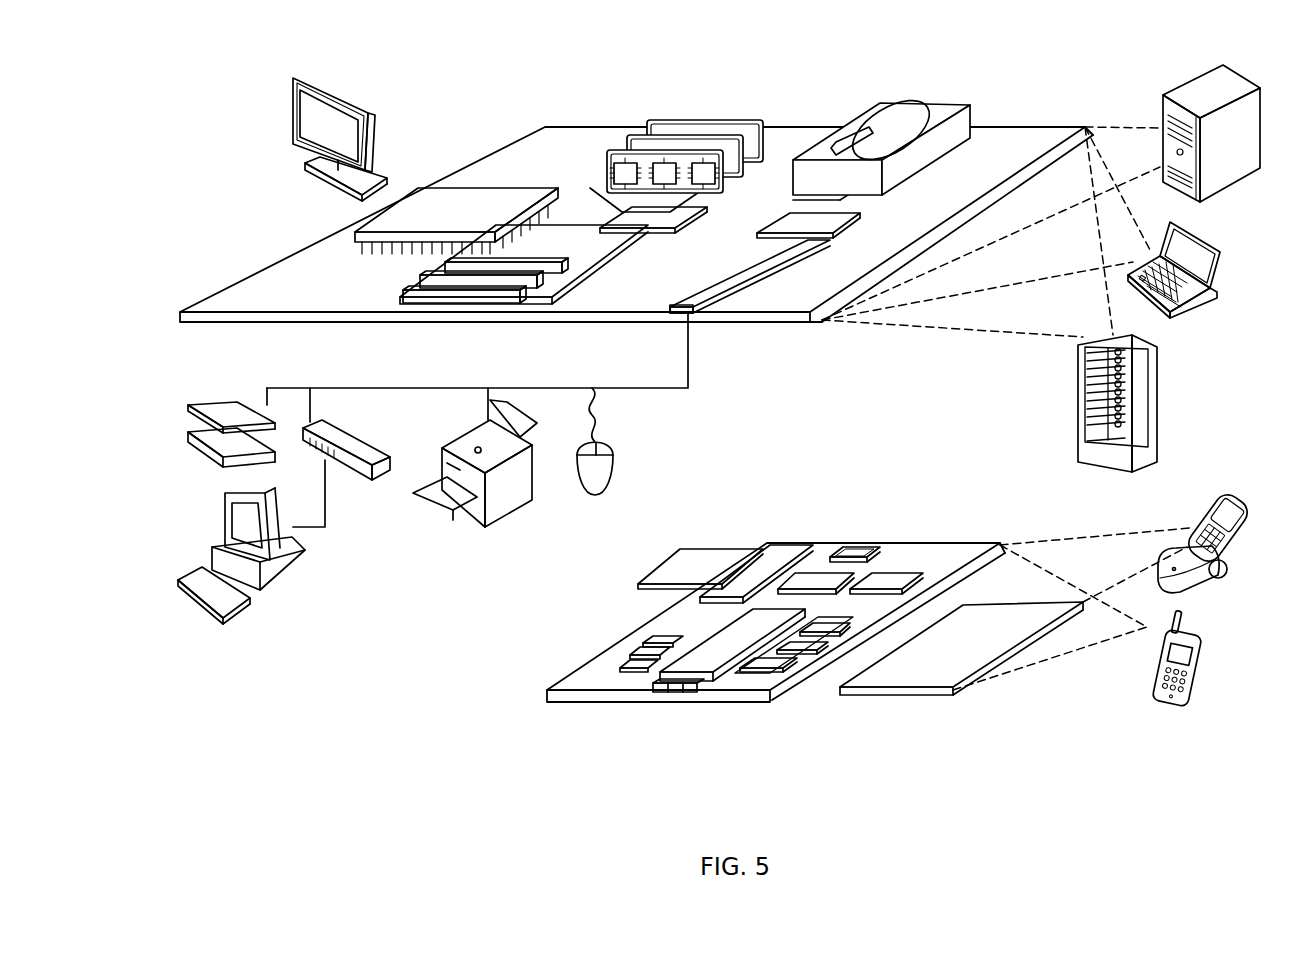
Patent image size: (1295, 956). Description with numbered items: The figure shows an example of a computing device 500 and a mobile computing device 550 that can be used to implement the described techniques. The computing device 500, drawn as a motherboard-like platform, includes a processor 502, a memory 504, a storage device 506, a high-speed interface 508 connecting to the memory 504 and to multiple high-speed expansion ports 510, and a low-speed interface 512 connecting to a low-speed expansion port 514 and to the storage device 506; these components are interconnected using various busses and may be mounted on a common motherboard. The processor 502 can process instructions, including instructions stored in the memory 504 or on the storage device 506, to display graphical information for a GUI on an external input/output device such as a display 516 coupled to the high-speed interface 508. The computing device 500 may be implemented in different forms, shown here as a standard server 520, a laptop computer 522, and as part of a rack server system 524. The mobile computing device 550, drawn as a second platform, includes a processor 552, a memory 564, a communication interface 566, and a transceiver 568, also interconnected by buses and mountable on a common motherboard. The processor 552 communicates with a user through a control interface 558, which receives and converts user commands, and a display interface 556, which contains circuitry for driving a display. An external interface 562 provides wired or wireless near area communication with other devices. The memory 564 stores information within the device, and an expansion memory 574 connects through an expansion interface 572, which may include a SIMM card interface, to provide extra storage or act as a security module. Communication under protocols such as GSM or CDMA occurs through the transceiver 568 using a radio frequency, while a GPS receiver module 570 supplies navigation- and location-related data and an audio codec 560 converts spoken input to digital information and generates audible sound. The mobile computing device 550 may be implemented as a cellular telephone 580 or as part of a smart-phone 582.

The computing device 500 is at (476, 100).
The processor 502 is at (355, 232).
The memory 504 is at (663, 121).
The storage device 506 is at (878, 118).
The high-speed interface 508 is at (605, 222).
The high-speed expansion ports 510 is at (403, 292).
The low-speed interface 512 is at (790, 222).
The low-speed expansion port 514 is at (693, 313).
The display 516 is at (300, 80).
The standard server 520 is at (1163, 118).
The laptop computer 522 is at (1220, 252).
The rack server system 524 is at (1078, 430).
The mobile computing device 550 is at (522, 702).
The processor 552 is at (714, 670).
The display interface 556 is at (778, 673).
The control interface 558 is at (803, 654).
The audio codec 560 is at (830, 636).
The external interface 562 is at (676, 692).
The memory 564 is at (635, 662).
The communication interface 566 is at (820, 580).
The transceiver 568 is at (888, 582).
The GPS receiver module 570 is at (865, 550).
The expansion interface 572 is at (750, 563).
The expansion memory 574 is at (712, 562).
The cellular telephone 580 is at (1203, 512).
The smart-phone 582 is at (1155, 660).